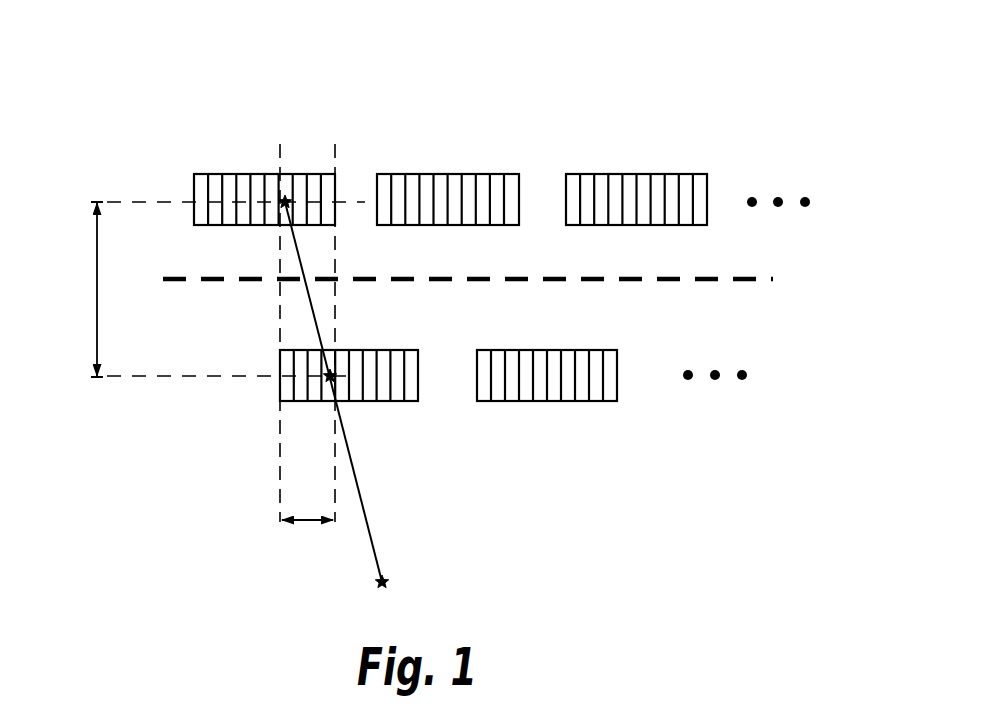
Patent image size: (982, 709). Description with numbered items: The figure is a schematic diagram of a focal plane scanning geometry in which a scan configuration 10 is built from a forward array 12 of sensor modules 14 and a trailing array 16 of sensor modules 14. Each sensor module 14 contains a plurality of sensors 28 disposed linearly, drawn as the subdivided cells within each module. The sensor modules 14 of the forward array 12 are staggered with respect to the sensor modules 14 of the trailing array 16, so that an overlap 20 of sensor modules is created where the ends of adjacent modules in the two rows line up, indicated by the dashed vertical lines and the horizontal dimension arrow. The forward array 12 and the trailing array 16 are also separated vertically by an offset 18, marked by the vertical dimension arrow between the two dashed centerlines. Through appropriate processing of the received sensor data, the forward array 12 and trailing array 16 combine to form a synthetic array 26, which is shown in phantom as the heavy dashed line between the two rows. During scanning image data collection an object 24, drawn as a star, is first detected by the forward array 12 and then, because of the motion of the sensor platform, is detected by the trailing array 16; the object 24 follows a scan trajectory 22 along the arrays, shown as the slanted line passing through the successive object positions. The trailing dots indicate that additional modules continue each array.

The scan configuration 10 is at (748, 116).
The forward array 12 is at (186, 158).
The sensor modules 14 is at (247, 174).
The trailing array 16 is at (246, 406).
The offset 18 is at (96, 306).
The overlap 20 is at (308, 513).
The scan trajectory 22 is at (374, 548).
The object 24 is at (287, 198).
The synthetic array 26 is at (762, 276).
The sensors 28 is at (245, 215).